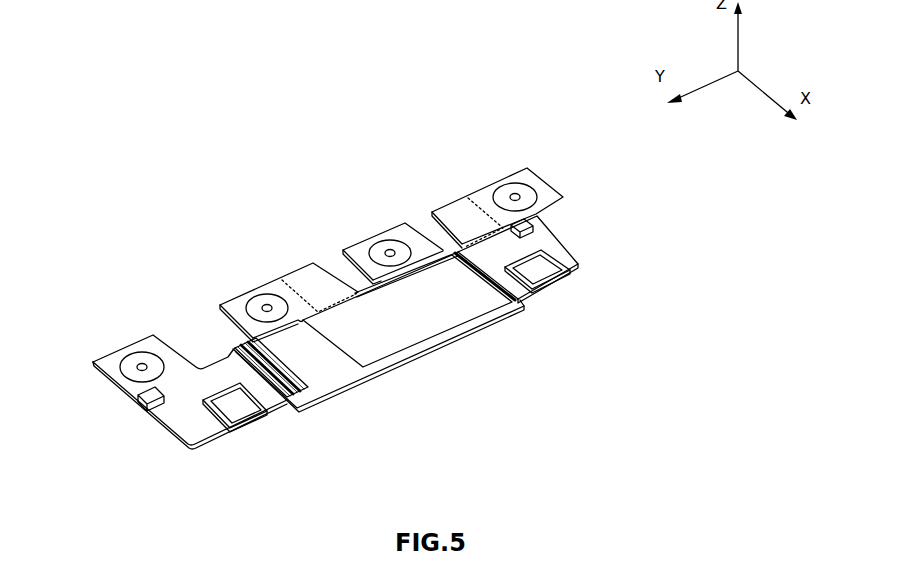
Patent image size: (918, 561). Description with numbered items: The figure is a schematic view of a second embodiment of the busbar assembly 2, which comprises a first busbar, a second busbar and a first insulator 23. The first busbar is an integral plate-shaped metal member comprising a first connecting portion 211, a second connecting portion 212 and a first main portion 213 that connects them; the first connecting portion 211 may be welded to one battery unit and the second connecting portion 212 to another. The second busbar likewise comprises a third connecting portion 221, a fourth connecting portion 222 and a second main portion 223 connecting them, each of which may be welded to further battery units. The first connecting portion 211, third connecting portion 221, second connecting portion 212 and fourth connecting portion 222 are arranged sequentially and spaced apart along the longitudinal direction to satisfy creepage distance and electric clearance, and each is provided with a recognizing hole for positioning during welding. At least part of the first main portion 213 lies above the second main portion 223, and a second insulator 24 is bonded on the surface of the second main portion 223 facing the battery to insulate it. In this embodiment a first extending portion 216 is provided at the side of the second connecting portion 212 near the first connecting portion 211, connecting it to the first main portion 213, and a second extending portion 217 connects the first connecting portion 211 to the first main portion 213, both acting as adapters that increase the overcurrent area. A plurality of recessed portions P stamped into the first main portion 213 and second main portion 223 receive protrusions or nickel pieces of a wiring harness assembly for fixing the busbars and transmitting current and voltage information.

The busbar assembly 2 is at (122, 157).
The first connecting portion 211 is at (522, 178).
The second connecting portion 212 is at (235, 305).
The first main portion 213 is at (453, 305).
The first extending portion 216 is at (307, 277).
The second extending portion 217 is at (453, 210).
The third connecting portion 221 is at (398, 230).
The fourth connecting portion 222 is at (143, 345).
The second main portion 223 is at (207, 420).
The first insulator 23 is at (330, 373).
The second insulator 24 is at (293, 407).
The recessed portion P is at (522, 224).